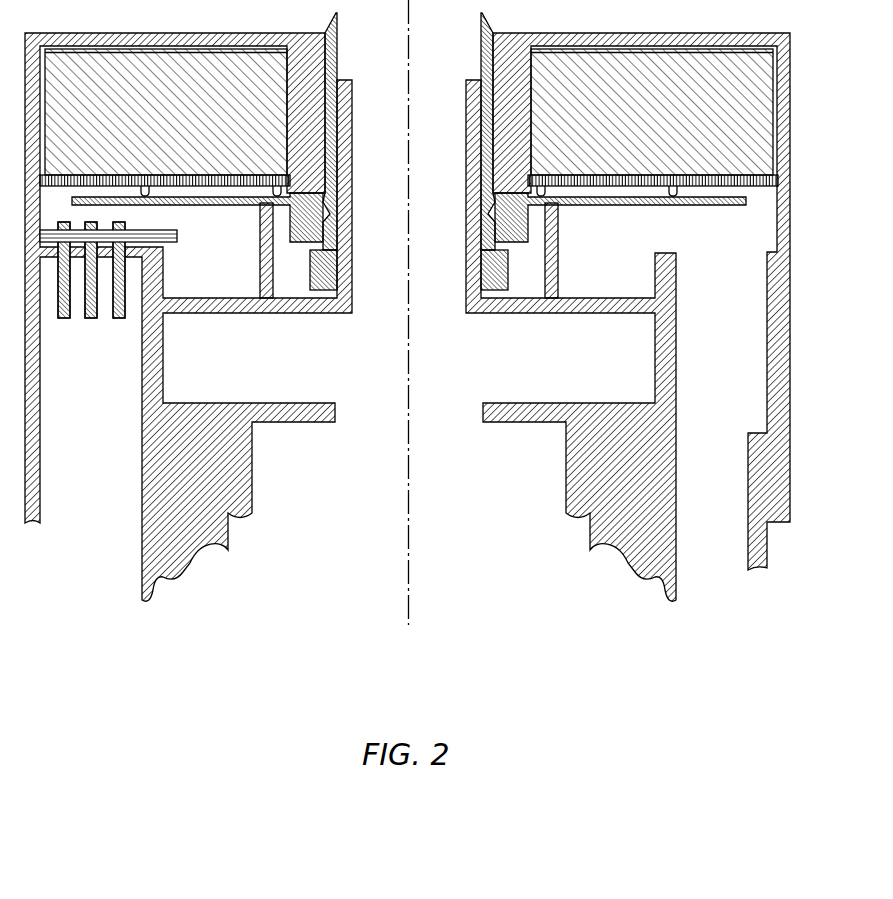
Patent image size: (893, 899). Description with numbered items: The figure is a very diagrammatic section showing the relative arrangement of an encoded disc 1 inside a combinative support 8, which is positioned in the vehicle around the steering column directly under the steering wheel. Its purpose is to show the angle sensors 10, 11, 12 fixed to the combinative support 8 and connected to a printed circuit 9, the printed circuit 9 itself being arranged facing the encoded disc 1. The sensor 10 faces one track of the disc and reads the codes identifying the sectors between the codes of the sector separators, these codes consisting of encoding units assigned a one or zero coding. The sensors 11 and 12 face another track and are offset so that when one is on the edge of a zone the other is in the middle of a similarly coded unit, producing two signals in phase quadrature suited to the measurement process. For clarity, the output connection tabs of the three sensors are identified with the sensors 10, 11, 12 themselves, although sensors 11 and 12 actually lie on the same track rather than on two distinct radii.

The encoded disc 1 is at (200, 205).
The combinative support 8 is at (590, 472).
The printed circuit 9 is at (178, 238).
The angle sensor 10 is at (60, 320).
The angle sensor 11 is at (89, 320).
The angle sensor 12 is at (118, 320).